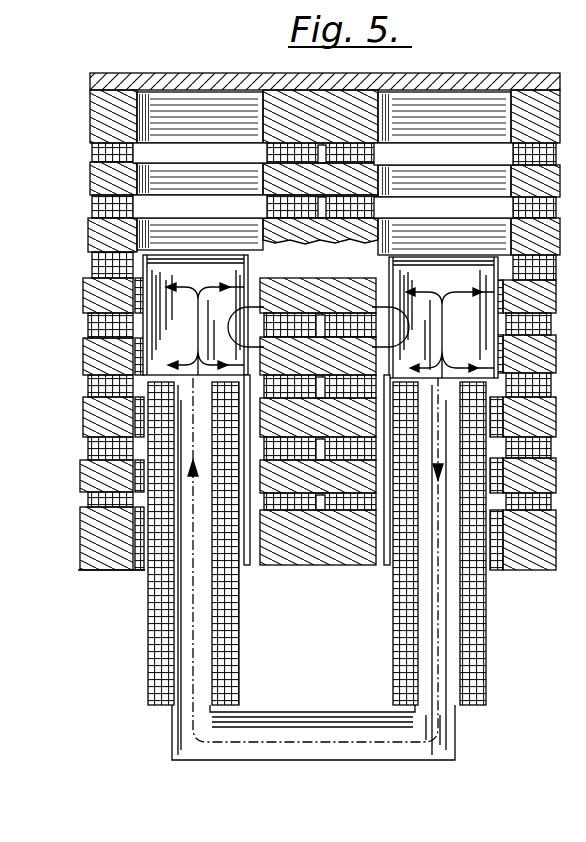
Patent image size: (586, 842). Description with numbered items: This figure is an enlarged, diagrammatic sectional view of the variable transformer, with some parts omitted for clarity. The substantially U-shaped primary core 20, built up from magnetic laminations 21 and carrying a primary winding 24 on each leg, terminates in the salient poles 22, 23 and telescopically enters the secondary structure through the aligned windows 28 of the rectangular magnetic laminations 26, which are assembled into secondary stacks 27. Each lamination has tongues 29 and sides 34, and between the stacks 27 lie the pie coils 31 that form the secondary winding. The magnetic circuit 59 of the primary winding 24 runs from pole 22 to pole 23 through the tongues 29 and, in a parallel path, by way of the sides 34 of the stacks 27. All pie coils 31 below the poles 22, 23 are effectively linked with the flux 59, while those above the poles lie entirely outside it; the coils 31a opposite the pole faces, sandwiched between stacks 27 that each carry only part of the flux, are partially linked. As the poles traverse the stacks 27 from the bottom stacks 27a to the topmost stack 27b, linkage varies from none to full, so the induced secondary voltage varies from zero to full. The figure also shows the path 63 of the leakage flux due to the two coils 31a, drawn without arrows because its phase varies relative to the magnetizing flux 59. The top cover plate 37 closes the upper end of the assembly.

The top cover plate 37 is at (90, 76).
The topmost stack 27b is at (86, 143).
The windows 28 is at (90, 140).
The secondary stacks 27 is at (84, 160).
The sides 34 is at (84, 297).
The pie coils opposite pole faces 31a is at (88, 326).
The pie coils 31 is at (88, 388).
The bottom stacks 27a is at (76, 507).
The magnetic laminations 26 is at (97, 571).
The magnetic laminations 21 is at (186, 612).
The magnetic circuit 59 is at (192, 648).
The salient pole 22 is at (200, 277).
The lamination tongues 29 is at (296, 284).
The leakage flux path 63 is at (362, 306).
The salient pole 23 is at (510, 156).
The primary winding 24 is at (486, 595).
The primary core 20 is at (446, 633).